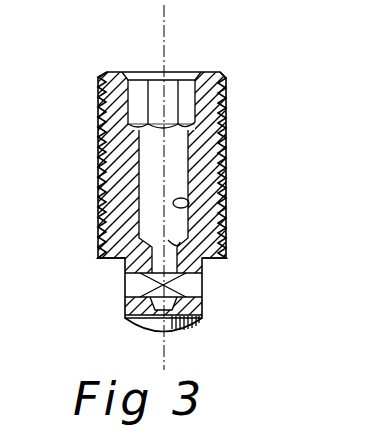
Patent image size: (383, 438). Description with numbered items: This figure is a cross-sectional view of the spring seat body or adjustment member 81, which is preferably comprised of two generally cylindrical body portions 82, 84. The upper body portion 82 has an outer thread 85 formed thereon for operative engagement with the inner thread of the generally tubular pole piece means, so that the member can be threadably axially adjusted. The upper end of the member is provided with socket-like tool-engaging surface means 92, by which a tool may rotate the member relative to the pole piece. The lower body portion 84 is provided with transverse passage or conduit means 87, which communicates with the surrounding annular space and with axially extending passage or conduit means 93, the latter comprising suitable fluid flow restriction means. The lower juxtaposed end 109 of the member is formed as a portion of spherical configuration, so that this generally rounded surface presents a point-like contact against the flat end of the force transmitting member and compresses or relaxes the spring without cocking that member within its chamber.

The spring seat body member 81 is at (230, 71).
The body portion 82 is at (206, 171).
The body portion 84 is at (203, 298).
The outer thread 85 is at (222, 126).
The transverse passage or conduit means 87 is at (203, 283).
The socket-like tool-engaging surface means 92 is at (137, 101).
The axially extending passage or conduit means 93 is at (180, 241).
The end of spherical configuration 109 is at (152, 336).